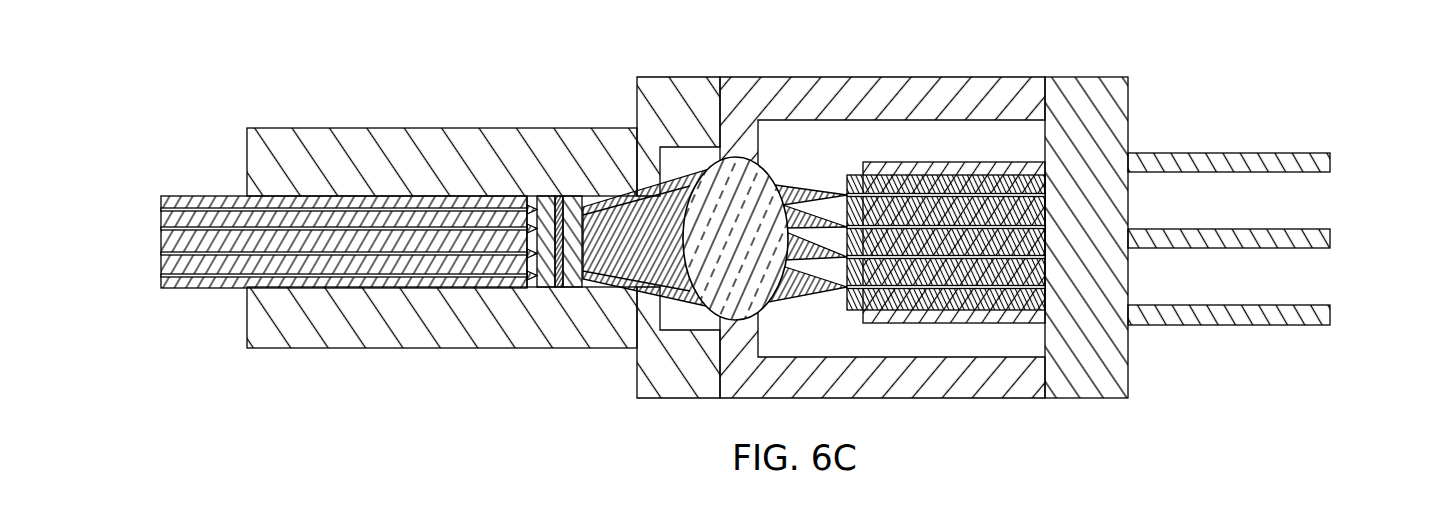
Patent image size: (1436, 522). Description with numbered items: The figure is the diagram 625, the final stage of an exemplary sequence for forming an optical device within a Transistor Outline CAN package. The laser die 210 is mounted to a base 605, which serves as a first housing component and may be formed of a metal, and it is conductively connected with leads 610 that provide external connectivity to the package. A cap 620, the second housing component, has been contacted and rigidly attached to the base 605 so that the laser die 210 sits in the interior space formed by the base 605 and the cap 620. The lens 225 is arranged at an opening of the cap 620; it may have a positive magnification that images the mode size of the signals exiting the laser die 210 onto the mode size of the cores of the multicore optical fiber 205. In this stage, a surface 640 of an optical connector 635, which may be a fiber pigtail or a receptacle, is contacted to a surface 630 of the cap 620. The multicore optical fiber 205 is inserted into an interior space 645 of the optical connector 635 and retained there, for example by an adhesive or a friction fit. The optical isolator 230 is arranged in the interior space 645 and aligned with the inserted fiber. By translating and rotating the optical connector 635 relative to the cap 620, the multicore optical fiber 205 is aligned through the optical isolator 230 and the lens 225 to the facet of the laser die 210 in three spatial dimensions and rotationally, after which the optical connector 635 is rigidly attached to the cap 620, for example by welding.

The multicore optical fiber 205 is at (193, 196).
The laser die 210 is at (851, 176).
The lens 225 is at (712, 177).
The optical isolator 230 is at (549, 204).
The base 605 is at (1075, 77).
The leads 610 is at (1337, 153).
The cap 620 is at (953, 400).
The diagram 625 is at (1246, 34).
The surface of the cap 630 is at (716, 324).
The optical connector 635 is at (323, 128).
The surface of the optical connector 640 is at (713, 364).
The interior space 645 is at (524, 293).